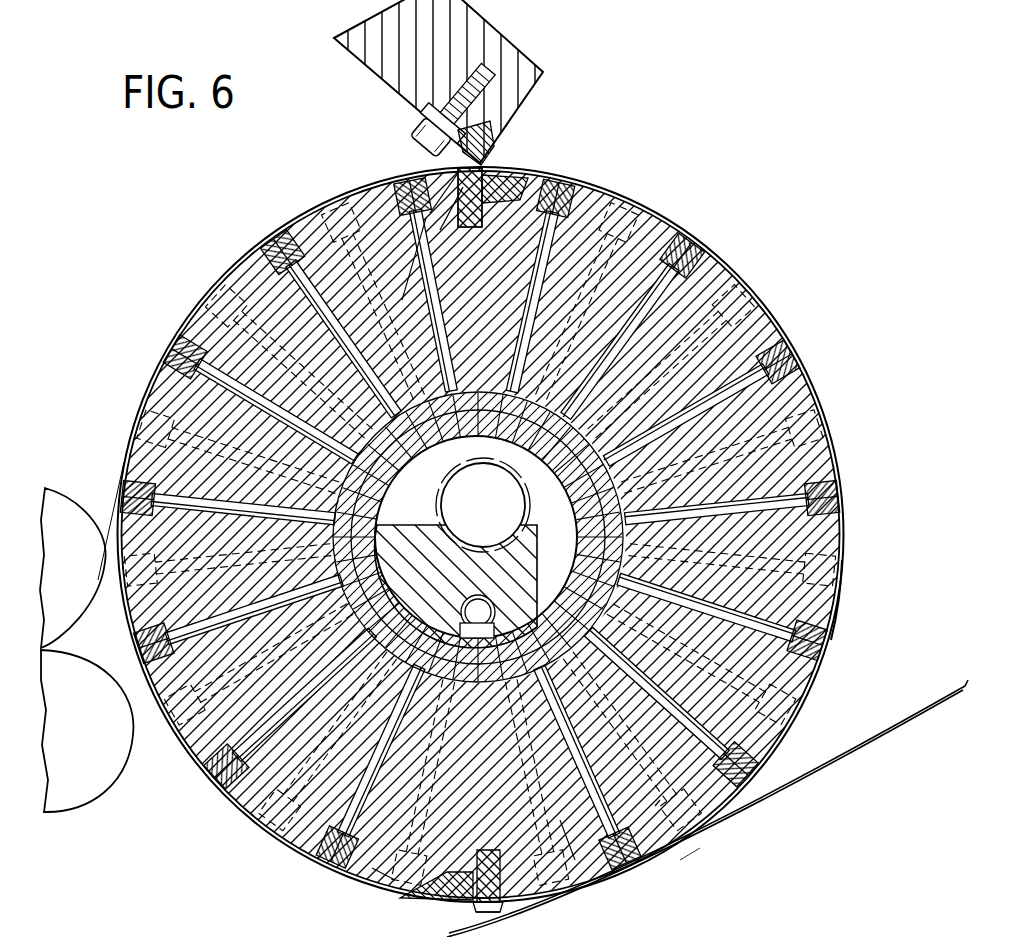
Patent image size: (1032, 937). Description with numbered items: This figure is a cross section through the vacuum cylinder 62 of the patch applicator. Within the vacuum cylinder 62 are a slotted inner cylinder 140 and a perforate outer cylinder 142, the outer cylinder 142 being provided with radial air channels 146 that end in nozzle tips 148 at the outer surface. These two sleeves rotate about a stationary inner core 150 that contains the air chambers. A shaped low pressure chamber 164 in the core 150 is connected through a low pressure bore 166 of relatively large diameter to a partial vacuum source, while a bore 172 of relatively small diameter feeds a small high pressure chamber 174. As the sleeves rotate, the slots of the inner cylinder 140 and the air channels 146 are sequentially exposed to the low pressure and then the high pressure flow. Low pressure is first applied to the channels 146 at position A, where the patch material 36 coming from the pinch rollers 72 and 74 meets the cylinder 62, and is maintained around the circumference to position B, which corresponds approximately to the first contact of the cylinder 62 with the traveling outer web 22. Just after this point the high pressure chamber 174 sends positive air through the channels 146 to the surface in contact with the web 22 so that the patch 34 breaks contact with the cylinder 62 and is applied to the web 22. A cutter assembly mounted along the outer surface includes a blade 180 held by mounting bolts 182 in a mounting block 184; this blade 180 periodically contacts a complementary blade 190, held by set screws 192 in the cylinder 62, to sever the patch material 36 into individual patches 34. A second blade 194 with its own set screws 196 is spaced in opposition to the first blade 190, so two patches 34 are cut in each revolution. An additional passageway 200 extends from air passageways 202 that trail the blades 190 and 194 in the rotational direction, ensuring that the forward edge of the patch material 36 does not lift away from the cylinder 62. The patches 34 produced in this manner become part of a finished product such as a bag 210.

The outer web 22 is at (820, 772).
The patch 34 is at (806, 382).
The patch material 36 is at (246, 247).
The vacuum cylinder 62 is at (838, 606).
The pinch roller 72 is at (65, 507).
The pinch roller 74 is at (99, 769).
The slotted inner cylinder 140 is at (322, 845).
The outer cylinder 142 is at (372, 868).
The air channel 146 is at (652, 282).
The nozzle tip 148 is at (697, 253).
The inner core 150 is at (248, 805).
The low pressure chamber 164 is at (568, 518).
The low pressure bore 166 is at (499, 503).
The bore 172 is at (477, 616).
The high pressure chamber 174 is at (446, 690).
The blade 180 is at (486, 160).
The mounting bolt 182 is at (418, 140).
The mounting block 184 is at (520, 63).
The complementary blade 190 is at (478, 174).
The set screw 192 is at (500, 190).
The second blade 194 is at (473, 908).
The set screw 196 is at (433, 902).
The additional passageway 200 is at (430, 218).
The air passageway 202 is at (442, 312).
The bag 210 is at (697, 892).
The position A is at (174, 498).
The position B is at (655, 806).